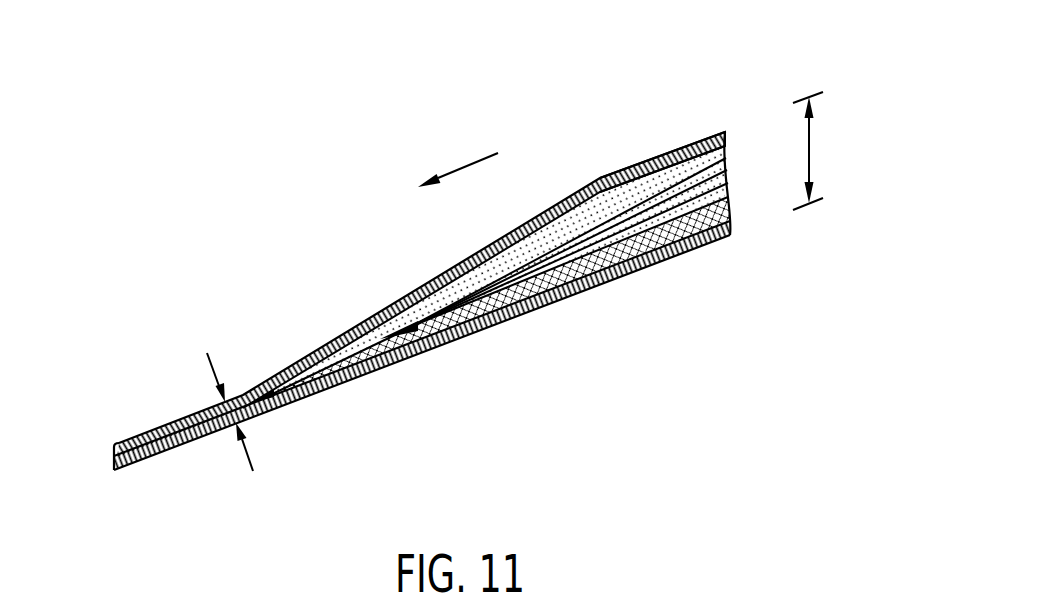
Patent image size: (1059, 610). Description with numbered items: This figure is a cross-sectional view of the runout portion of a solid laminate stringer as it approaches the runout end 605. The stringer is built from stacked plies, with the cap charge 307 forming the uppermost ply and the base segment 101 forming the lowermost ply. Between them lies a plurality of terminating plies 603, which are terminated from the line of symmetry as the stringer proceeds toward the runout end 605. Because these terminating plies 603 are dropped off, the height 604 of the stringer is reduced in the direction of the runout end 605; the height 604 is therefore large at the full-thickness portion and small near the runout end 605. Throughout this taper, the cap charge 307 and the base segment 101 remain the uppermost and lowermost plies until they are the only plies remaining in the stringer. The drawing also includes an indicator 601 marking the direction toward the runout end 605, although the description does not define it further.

The base segment 101 is at (728, 236).
The cap charge 307 is at (726, 131).
The taper direction 601 is at (458, 168).
The terminating plies 603 is at (731, 143).
The height 604 is at (810, 158).
The runout end 605 is at (113, 456).